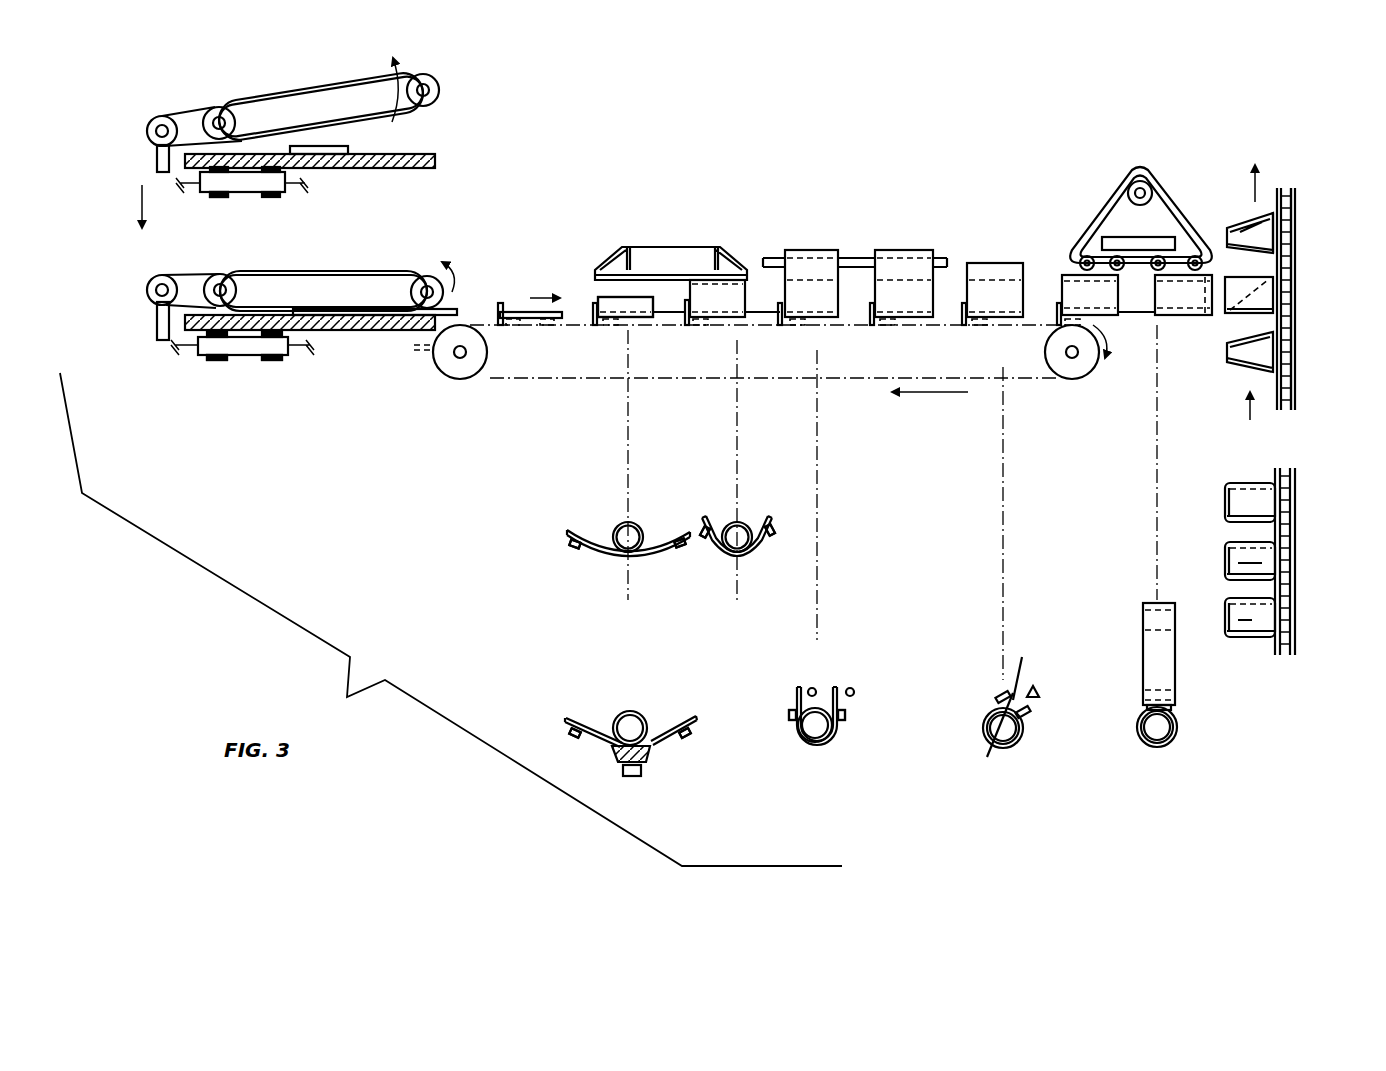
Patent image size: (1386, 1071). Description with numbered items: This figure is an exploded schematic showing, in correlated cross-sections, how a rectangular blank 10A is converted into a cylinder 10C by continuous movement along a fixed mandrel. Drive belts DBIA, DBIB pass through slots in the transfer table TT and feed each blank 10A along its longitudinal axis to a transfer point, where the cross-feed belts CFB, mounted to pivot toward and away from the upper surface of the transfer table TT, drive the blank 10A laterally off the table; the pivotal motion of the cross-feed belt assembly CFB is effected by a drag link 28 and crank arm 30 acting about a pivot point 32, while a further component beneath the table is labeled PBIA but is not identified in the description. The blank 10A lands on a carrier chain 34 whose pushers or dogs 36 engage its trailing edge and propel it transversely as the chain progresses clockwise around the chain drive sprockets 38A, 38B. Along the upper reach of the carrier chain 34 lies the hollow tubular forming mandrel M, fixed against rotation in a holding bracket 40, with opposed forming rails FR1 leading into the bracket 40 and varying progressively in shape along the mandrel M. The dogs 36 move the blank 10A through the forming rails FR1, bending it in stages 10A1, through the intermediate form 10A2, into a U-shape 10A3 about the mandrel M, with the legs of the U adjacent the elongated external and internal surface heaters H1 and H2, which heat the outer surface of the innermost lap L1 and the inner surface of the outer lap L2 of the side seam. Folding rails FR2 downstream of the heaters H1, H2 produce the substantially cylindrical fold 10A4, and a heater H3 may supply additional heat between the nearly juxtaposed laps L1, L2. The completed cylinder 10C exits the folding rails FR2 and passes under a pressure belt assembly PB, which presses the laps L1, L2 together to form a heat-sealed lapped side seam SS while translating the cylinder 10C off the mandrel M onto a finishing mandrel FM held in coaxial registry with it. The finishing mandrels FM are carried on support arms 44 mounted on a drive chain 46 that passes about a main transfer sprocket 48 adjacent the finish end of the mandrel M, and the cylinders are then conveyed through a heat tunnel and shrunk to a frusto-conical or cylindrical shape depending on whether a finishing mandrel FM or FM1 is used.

The drag link 28 is at (156, 156).
The crank arm 30 is at (205, 115).
The pivot point 32 is at (226, 115).
The carrier chain 34 is at (515, 381).
The pusher dogs 36 is at (505, 308).
The chain drive sprocket 38A is at (467, 352).
The chain drive sprocket 38B is at (1044, 352).
The holding bracket 40 is at (670, 250).
The support arms 44 is at (1300, 233).
The drive chain 46 is at (1298, 249).
The main transfer sprocket 48 is at (1302, 297).
The blank 10A is at (330, 146).
The blank bending stage 10A1 is at (640, 297).
The workpiece second stage 10A2 is at (720, 300).
The U-shaped blank 10A3 is at (830, 250).
The cylindrical fold 10A4 is at (1010, 264).
The cylinder 10C is at (1225, 280).
The cross-feed belts CFB is at (416, 106).
The transfer table TT is at (366, 169).
The pusher block PBIA is at (280, 197).
The drive belt DBIB is at (216, 198).
The drive belt DBIA is at (280, 362).
The forming mandrel M is at (595, 306).
The pressure belt assembly PB is at (1166, 190).
The side seam SS is at (1205, 318).
The finishing mandrel FM is at (1275, 208).
The finishing mandrel FM1 is at (1250, 560).
The forming rails FR1 is at (570, 543).
The folding rails FR2 is at (998, 694).
The external surface heater H1 is at (853, 688).
The internal surface heater H2 is at (815, 688).
The heater H3 is at (1036, 686).
The innermost lap L1 is at (1018, 666).
The outer lap L2 is at (989, 752).